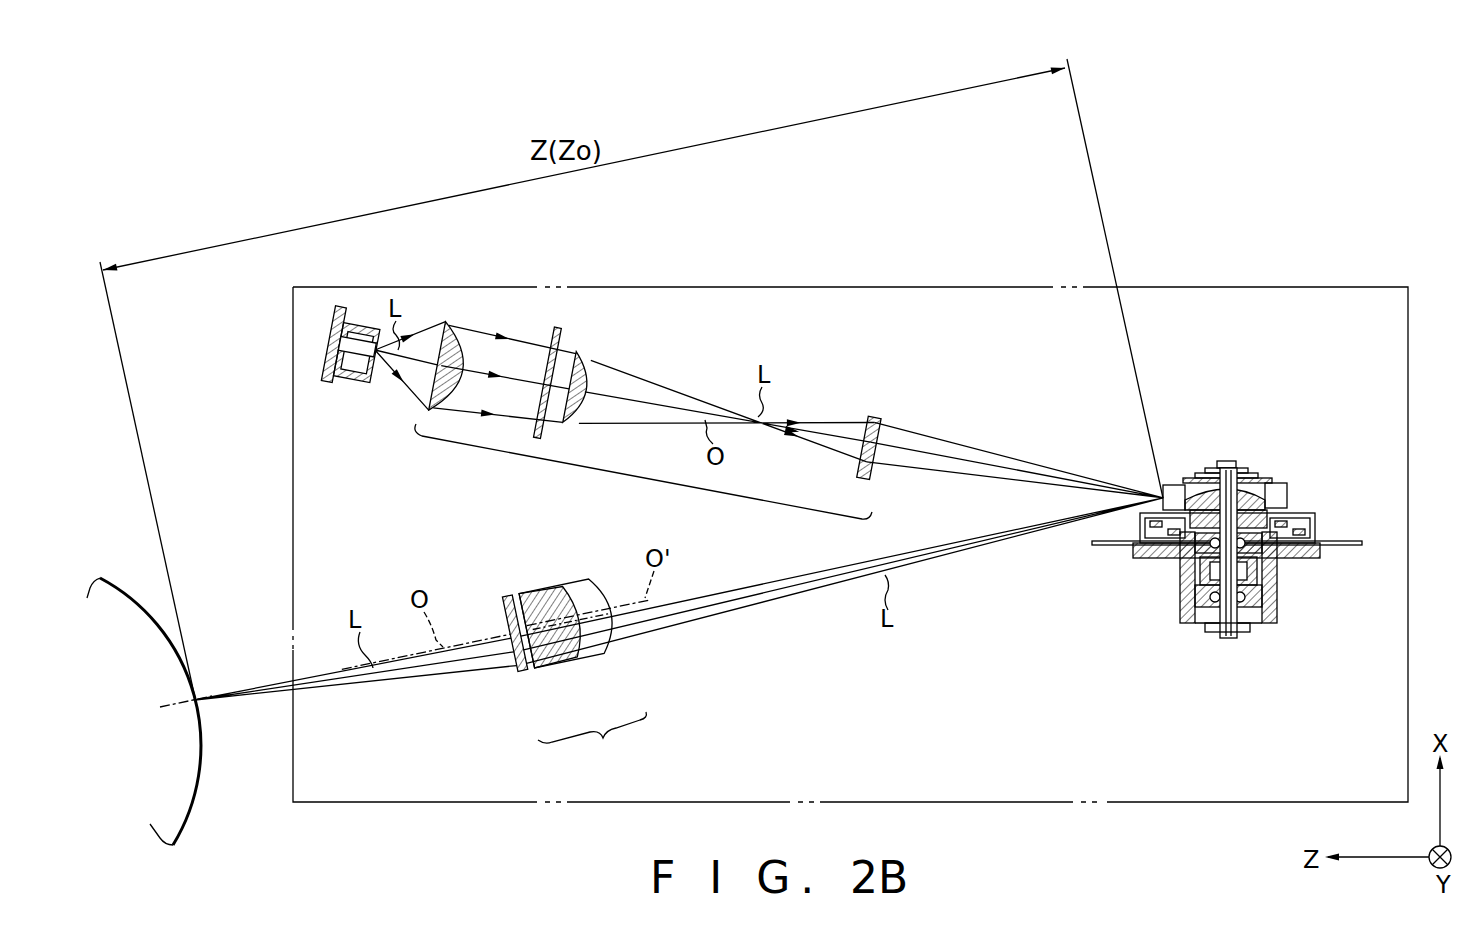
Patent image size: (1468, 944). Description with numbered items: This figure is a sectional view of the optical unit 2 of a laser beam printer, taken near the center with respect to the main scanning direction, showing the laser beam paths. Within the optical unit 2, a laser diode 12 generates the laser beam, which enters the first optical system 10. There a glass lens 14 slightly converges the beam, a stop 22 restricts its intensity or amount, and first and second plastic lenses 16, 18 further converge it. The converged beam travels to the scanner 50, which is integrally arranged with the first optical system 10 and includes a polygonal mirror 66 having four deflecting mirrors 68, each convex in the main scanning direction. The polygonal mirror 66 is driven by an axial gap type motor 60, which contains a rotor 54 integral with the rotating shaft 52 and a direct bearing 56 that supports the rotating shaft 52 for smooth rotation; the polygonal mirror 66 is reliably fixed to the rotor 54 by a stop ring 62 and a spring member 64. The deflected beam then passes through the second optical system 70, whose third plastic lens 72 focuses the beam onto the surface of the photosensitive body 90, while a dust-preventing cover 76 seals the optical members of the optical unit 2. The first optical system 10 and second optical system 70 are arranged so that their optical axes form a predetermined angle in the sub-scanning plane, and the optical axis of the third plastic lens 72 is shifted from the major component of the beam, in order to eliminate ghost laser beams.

The optical unit 2 is at (1203, 276).
The first optical system 10 is at (616, 396).
The laser diode 12 is at (346, 377).
The glass lens 14 is at (470, 352).
The first plastic lens 16 is at (612, 375).
The second plastic lens 18 is at (885, 418).
The stop 22 is at (574, 366).
The scanner 50 is at (1295, 622).
The rotating shaft 52 is at (1226, 461).
The rotor 54 is at (1318, 520).
The direct bearing 56 is at (1196, 622).
The axial gap type motor 60 is at (1180, 590).
The stop ring 62 is at (1248, 478).
The spring member 64 is at (1262, 482).
The polygonal mirror 66 is at (1170, 485).
The deflecting mirror 68 is at (1290, 496).
The second optical system 70 is at (574, 672).
The third plastic lens 72 is at (596, 655).
The dust-preventing cover 76 is at (528, 668).
The photosensitive body 90 is at (196, 798).